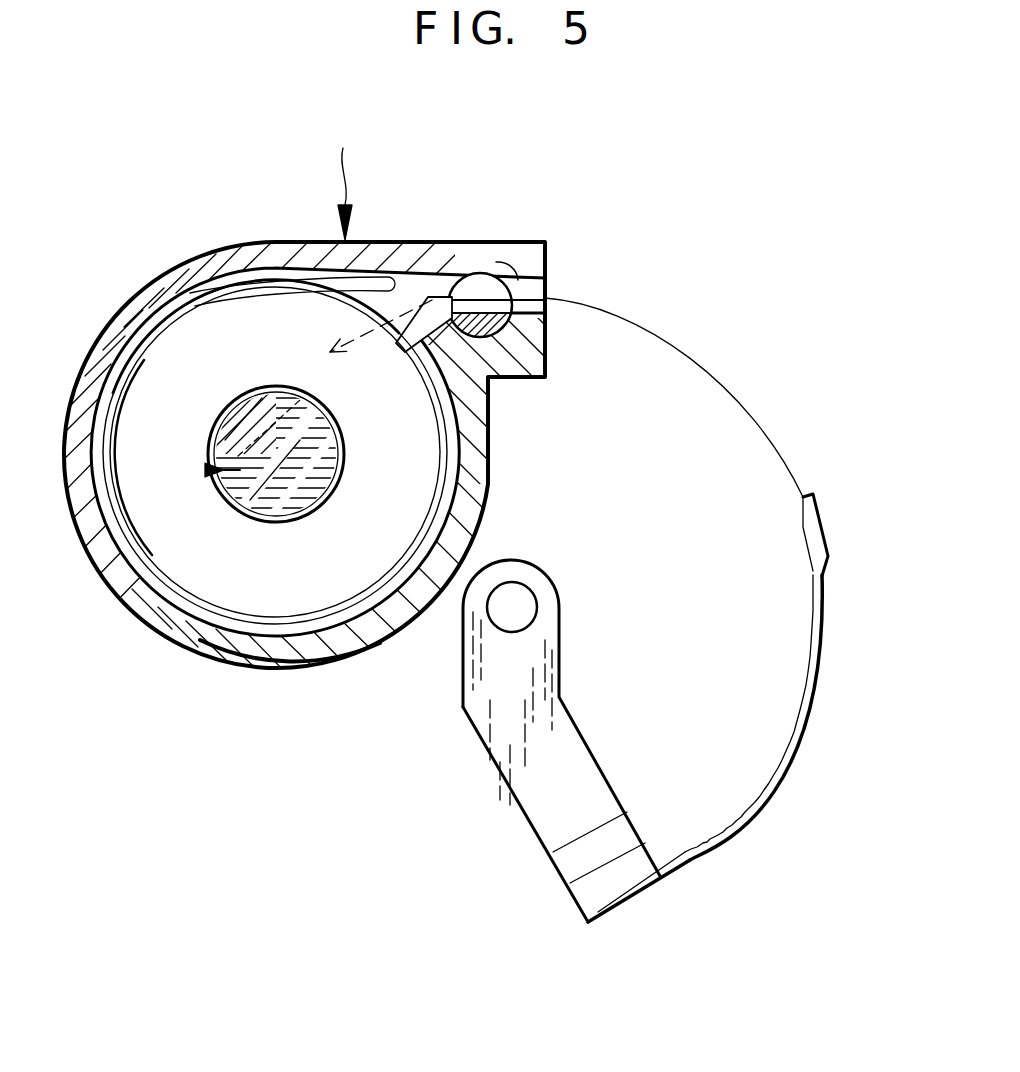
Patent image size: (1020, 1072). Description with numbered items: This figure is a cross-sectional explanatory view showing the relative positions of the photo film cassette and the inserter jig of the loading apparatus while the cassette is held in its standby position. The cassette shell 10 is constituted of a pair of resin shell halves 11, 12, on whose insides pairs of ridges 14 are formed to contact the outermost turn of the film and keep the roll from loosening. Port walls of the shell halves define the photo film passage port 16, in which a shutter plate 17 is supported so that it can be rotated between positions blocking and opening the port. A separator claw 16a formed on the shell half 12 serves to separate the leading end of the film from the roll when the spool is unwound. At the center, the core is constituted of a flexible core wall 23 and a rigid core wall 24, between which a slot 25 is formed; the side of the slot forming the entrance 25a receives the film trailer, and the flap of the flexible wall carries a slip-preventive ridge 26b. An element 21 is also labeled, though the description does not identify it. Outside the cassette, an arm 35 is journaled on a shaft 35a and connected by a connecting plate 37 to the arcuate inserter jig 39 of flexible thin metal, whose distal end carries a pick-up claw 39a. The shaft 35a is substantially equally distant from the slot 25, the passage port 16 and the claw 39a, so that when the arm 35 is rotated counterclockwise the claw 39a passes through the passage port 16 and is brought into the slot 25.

The cassette shell 10 is at (348, 174).
The shell half 11 is at (210, 246).
The shell half 12 is at (290, 670).
The ridges 14 is at (140, 330).
The photo film passage port 16 is at (548, 290).
The separator claw 16a is at (405, 357).
The shutter plate 17 is at (481, 298).
The reel flange 21 is at (407, 497).
The core wall 23 is at (208, 438).
The core wall 24 is at (262, 522).
The slot 25 is at (205, 470).
The entrance 25a is at (302, 388).
The slip-preventive ridge 26b is at (246, 393).
The arm 35 is at (517, 777).
The shaft 35a is at (517, 608).
The connecting plate 37 is at (620, 883).
The inserter jig 39 is at (786, 770).
The pick-up claw 39a is at (818, 507).